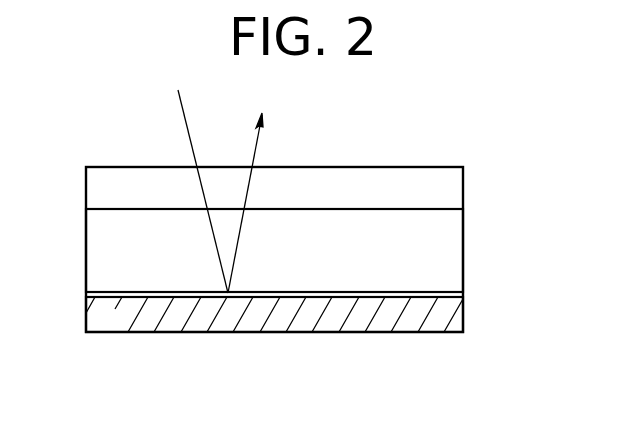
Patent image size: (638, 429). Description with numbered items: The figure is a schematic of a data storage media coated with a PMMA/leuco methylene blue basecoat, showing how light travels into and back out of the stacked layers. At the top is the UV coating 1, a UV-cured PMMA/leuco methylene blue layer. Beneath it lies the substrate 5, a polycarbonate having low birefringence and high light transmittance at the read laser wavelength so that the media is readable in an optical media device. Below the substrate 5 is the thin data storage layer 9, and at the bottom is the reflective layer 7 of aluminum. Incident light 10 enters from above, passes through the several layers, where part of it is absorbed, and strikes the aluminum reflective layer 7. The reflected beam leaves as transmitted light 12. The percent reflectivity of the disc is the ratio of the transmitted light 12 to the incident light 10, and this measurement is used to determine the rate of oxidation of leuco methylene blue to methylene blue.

The UV coating 1 is at (463, 190).
The substrate 5 is at (463, 248).
The reflective layer 7 is at (463, 313).
The data storage layer 9 is at (463, 295).
The incident light 10 is at (197, 178).
The transmitted light 12 is at (251, 189).